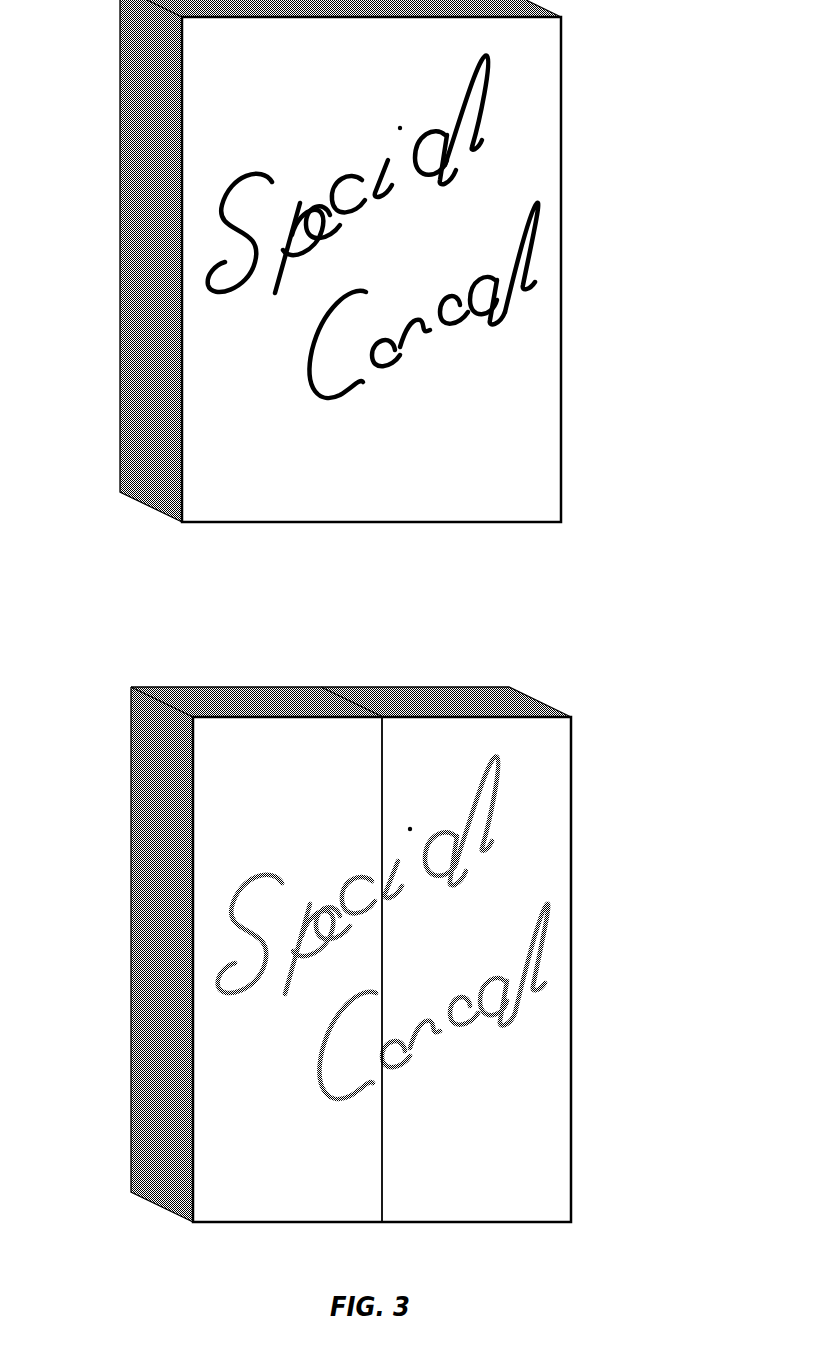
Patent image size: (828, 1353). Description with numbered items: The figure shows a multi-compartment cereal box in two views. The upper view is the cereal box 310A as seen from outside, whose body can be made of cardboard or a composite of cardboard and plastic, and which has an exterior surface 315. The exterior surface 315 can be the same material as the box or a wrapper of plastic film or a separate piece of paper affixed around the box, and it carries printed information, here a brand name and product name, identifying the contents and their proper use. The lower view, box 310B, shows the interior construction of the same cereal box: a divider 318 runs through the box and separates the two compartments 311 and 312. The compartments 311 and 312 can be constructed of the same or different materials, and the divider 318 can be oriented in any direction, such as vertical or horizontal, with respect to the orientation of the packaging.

The cereal box 310A is at (368, 261).
The exterior surface 315 is at (210, 362).
The box 310B is at (424, 985).
The compartment 311 is at (287, 969).
The compartment 312 is at (476, 969).
The divider 318 is at (382, 1172).